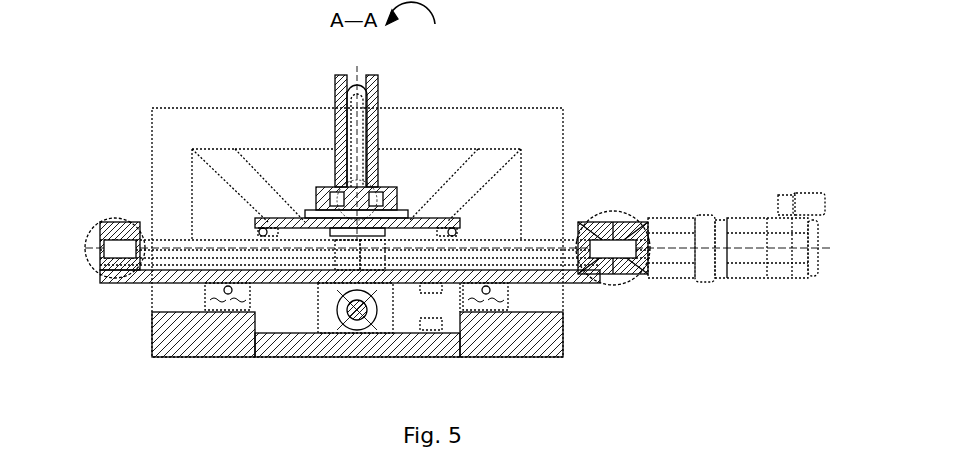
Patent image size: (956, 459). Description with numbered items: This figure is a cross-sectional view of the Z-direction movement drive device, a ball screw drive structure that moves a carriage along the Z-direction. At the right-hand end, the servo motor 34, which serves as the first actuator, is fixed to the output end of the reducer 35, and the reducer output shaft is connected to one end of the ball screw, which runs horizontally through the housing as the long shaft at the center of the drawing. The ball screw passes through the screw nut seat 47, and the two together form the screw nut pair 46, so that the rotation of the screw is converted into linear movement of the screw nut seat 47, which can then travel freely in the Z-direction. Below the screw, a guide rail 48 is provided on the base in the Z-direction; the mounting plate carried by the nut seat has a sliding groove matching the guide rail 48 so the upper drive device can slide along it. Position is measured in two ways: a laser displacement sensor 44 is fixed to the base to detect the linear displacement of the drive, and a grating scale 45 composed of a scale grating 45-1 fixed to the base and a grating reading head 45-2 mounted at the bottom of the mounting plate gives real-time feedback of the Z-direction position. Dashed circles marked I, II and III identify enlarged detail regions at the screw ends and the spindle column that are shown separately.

The servo motor 34 is at (735, 268).
The reducer 35 is at (667, 265).
The laser displacement sensor 44 is at (517, 305).
The grating scale 45 is at (427, 344).
The scale grating 45-1 is at (432, 325).
The grating reading head 45-2 is at (430, 287).
The screw nut pair 46 is at (378, 262).
The screw nut seat 47 is at (350, 266).
The guide rail 48 is at (232, 296).
The detail region I is at (625, 212).
The detail region II is at (98, 222).
The detail region III is at (385, 170).